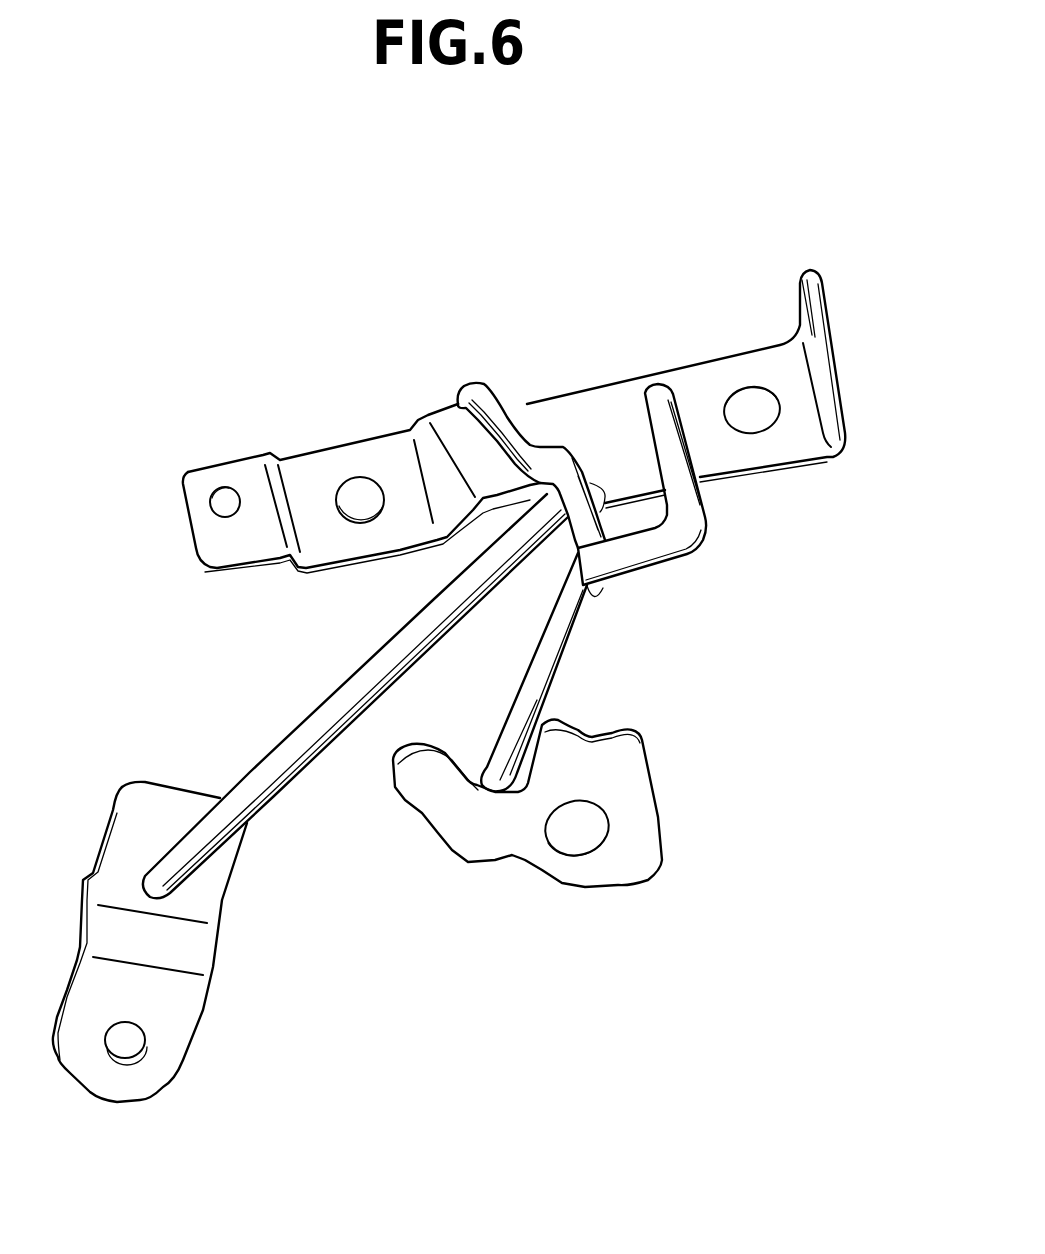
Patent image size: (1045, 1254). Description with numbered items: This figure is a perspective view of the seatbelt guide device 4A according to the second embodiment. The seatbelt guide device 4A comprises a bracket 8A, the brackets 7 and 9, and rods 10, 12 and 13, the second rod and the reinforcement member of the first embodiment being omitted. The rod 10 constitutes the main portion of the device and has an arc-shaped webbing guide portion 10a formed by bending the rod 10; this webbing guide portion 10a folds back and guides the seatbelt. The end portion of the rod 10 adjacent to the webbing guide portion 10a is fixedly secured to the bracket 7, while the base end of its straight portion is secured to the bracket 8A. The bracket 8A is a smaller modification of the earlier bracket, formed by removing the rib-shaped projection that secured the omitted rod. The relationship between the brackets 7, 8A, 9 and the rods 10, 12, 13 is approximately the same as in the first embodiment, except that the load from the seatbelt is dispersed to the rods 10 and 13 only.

The bracket 7 is at (313, 478).
The seatbelt guide device 4A is at (640, 308).
The webbing guide portion 10a is at (552, 444).
The rod 12 is at (697, 519).
The rod 10 is at (562, 643).
The rod 13 is at (363, 666).
The bracket 8A is at (657, 826).
The bracket 9 is at (203, 1018).